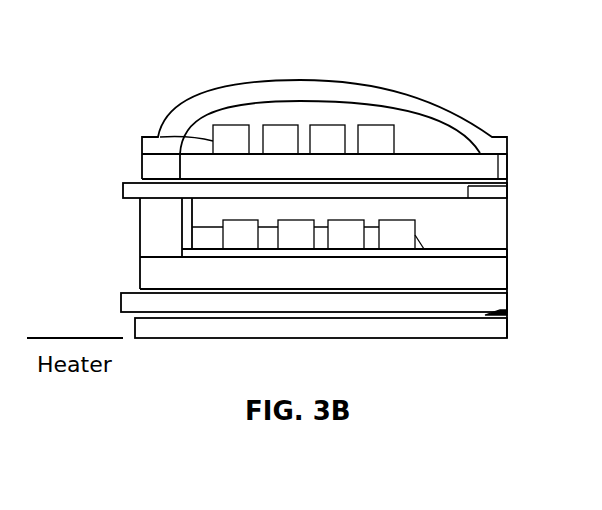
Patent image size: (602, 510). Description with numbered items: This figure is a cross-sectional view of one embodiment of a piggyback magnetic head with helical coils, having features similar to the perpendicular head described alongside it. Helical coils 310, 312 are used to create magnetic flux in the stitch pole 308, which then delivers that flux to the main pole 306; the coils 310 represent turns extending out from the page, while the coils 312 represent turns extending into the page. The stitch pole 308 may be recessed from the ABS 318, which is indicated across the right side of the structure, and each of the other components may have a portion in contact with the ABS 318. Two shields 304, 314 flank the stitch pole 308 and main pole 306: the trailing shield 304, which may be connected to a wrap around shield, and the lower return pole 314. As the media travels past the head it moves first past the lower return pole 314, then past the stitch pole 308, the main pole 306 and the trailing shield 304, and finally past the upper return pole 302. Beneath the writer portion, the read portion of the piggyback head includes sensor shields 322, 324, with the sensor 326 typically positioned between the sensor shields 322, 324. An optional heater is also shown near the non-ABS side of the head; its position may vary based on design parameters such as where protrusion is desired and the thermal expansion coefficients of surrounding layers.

The upper return pole 302 is at (447, 111).
The trailing shield 304 is at (508, 167).
The main pole 306 is at (508, 188).
The stitch pole 308 is at (460, 198).
The helical coils 310 is at (163, 136).
The helical coils 312 is at (226, 221).
The lower return pole 314 is at (357, 280).
The ABS 318 is at (507, 262).
The sensor shield 322 is at (121, 300).
The sensor shield 324 is at (135, 327).
The sensor 326 is at (500, 311).